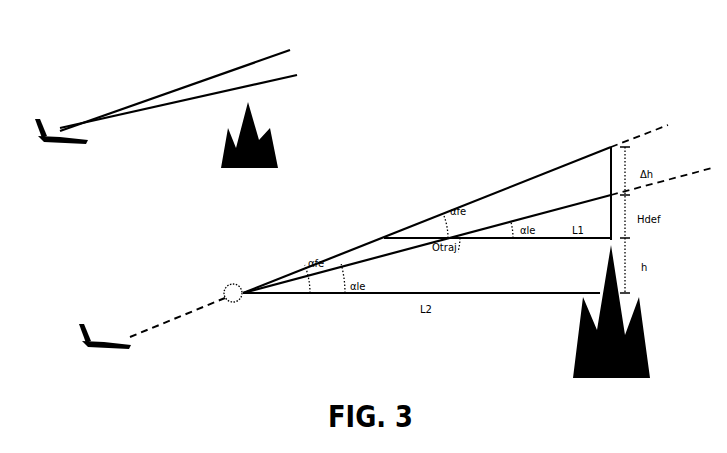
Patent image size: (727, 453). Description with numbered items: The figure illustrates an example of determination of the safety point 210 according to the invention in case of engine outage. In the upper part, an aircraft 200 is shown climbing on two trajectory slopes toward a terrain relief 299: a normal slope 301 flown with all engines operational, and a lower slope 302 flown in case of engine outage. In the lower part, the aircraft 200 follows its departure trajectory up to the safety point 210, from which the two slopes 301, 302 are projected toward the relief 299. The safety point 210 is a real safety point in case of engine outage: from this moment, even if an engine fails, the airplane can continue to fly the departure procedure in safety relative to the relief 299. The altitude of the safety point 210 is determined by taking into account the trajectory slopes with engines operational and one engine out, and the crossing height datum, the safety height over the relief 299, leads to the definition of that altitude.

The aircraft 200 is at (52, 112).
The safety point 210 is at (242, 252).
The relief 299 is at (280, 152).
The normal slope 301 is at (245, 33).
The slope in case of engine outage 302 is at (352, 60).